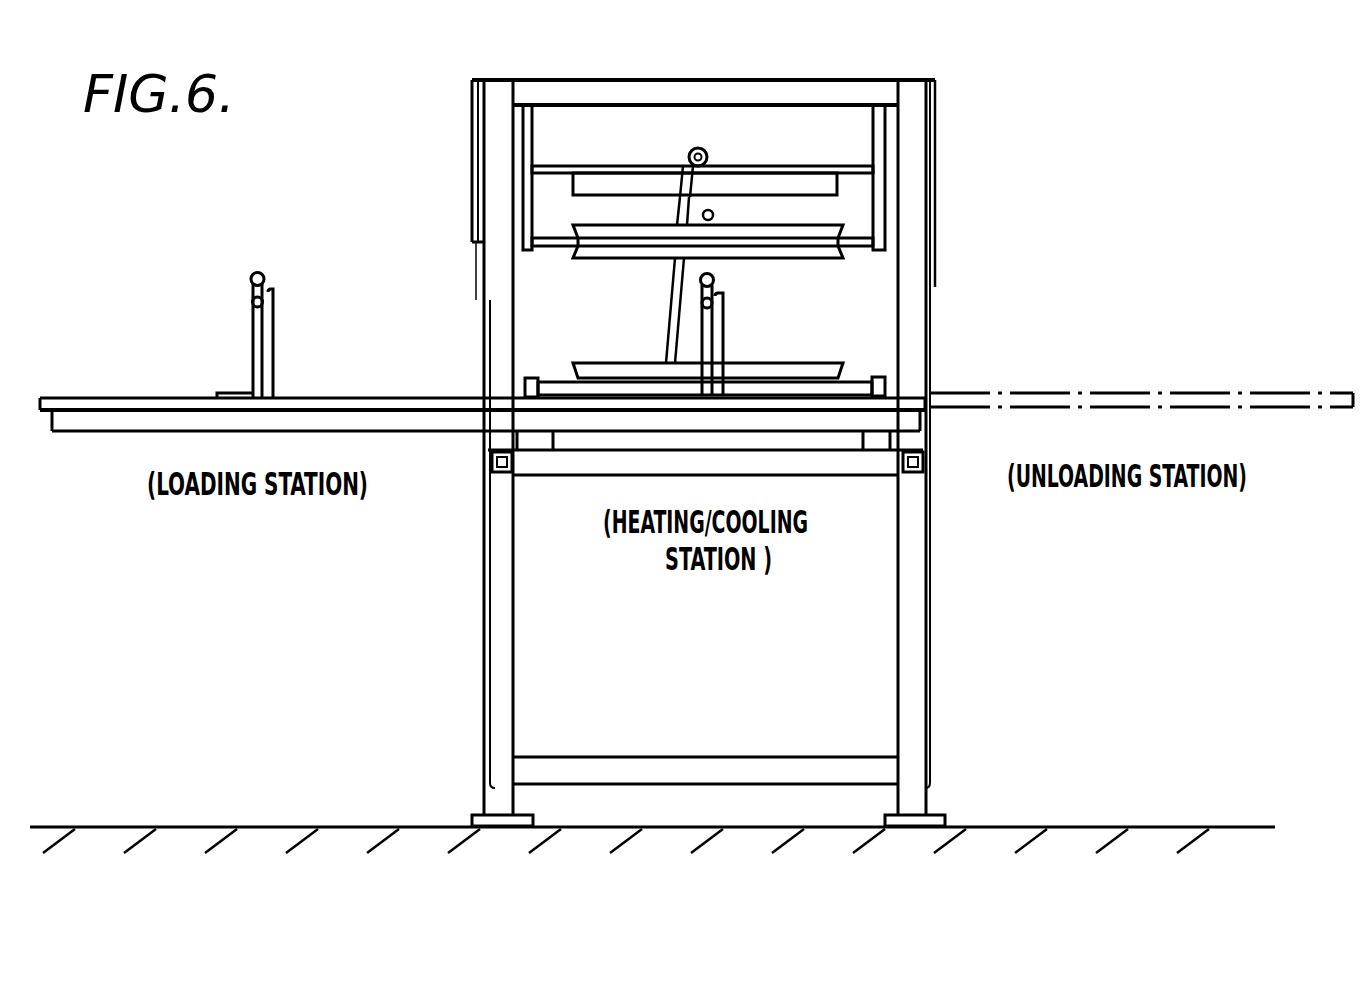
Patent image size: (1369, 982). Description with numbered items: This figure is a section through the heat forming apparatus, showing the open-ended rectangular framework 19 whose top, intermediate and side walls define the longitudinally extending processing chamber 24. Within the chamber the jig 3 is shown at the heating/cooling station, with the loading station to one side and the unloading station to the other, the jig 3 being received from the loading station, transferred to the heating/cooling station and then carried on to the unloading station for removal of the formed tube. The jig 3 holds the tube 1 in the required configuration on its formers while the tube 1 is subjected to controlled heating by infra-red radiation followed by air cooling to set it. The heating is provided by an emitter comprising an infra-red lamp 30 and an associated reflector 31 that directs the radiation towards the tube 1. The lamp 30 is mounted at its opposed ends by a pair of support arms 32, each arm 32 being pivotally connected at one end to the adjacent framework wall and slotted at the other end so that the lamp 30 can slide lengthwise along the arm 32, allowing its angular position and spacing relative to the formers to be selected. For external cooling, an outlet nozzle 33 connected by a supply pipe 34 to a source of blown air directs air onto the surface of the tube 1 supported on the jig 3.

The rectangular framework 19 is at (522, 84).
The processing chamber 24 is at (873, 305).
The infra-red lamp 30 is at (548, 252).
The reflector 31 is at (608, 259).
The support arm 32 is at (532, 141).
The outlet nozzle 33 is at (709, 210).
The supply pipe 34 is at (670, 322).
The tube 1 is at (714, 279).
The jig 3 is at (764, 347).